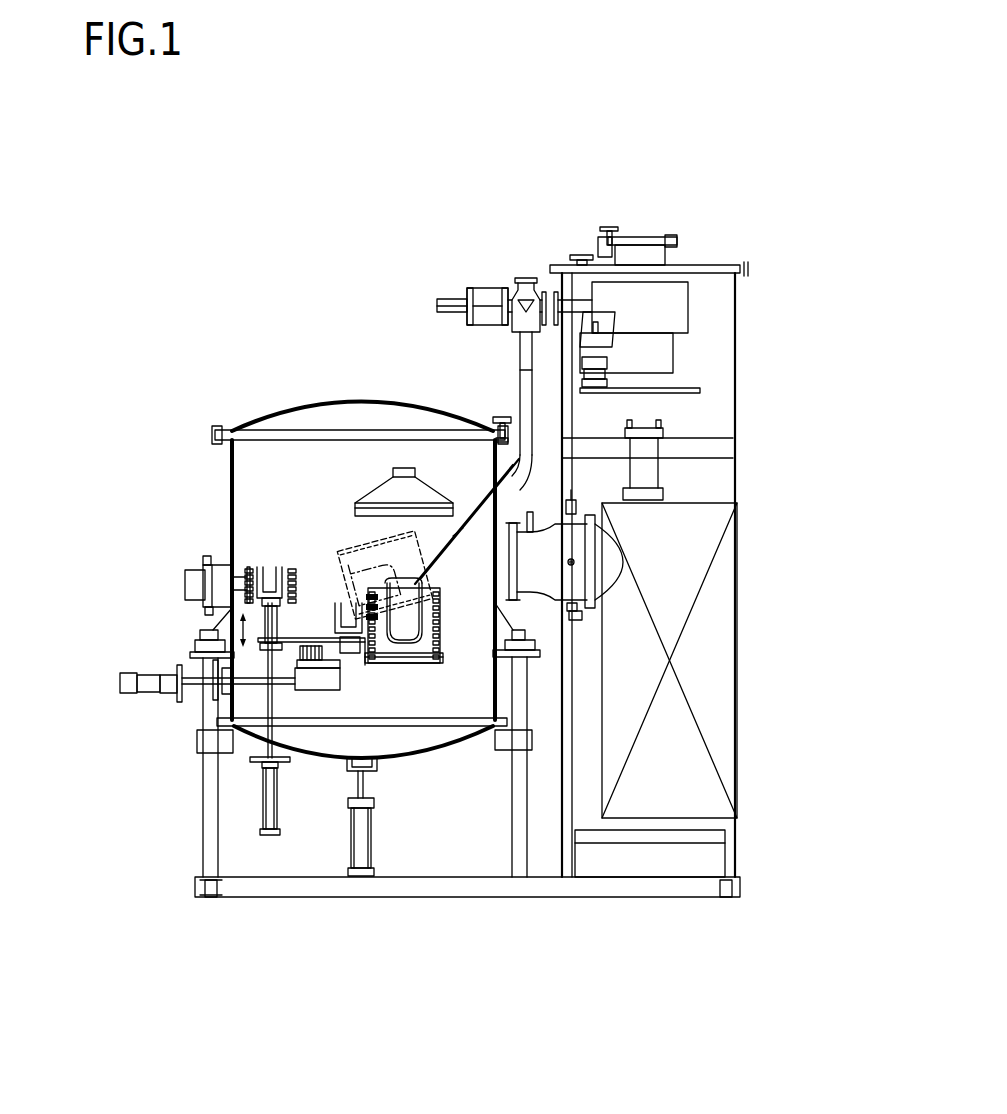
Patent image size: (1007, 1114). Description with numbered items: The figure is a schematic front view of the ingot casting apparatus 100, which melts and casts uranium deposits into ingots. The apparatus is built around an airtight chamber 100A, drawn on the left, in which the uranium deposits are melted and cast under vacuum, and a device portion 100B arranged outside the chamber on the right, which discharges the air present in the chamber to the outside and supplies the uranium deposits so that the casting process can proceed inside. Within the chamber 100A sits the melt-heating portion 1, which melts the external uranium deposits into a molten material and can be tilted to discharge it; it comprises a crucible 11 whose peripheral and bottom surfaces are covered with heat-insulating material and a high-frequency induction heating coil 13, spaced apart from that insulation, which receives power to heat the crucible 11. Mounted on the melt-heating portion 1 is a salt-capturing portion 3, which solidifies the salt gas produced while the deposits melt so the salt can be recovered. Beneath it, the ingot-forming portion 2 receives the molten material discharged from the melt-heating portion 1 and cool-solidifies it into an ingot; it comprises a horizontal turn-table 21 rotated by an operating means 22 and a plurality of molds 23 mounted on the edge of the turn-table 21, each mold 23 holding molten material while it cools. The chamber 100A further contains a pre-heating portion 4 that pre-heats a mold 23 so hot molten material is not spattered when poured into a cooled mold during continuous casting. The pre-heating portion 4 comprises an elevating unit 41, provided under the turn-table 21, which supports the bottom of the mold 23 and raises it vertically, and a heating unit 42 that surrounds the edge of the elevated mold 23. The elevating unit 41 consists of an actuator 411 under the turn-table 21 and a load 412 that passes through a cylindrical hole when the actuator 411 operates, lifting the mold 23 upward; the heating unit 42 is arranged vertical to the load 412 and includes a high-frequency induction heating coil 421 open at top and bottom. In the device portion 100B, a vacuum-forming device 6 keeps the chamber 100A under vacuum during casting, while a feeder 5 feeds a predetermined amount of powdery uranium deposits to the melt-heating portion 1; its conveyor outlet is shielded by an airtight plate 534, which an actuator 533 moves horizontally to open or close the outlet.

The ingot casting apparatus 100 is at (182, 228).
The chamber 100A is at (308, 400).
The device portion 100B is at (755, 477).
The melt-heating portion 1 is at (417, 690).
The crucible 11 is at (400, 645).
The high-frequency induction heating coil 13 is at (433, 657).
The ingot-forming portion 2 is at (163, 463).
The turn-table 21 is at (312, 645).
The operating means 22 is at (291, 568).
The mold 23 is at (262, 566).
The salt-capturing portion 3 is at (402, 455).
The pre-heating portion 4 is at (45, 630).
The elevating unit 41 is at (240, 795).
The actuator 411 is at (270, 818).
The load 412 is at (270, 725).
The heating unit 42 is at (180, 611).
The high-frequency induction heating coil 421 is at (248, 567).
The feeder 5 is at (549, 255).
The actuator 533 is at (456, 300).
The airtight plate 534 is at (518, 282).
The vacuum-forming device 6 is at (730, 652).